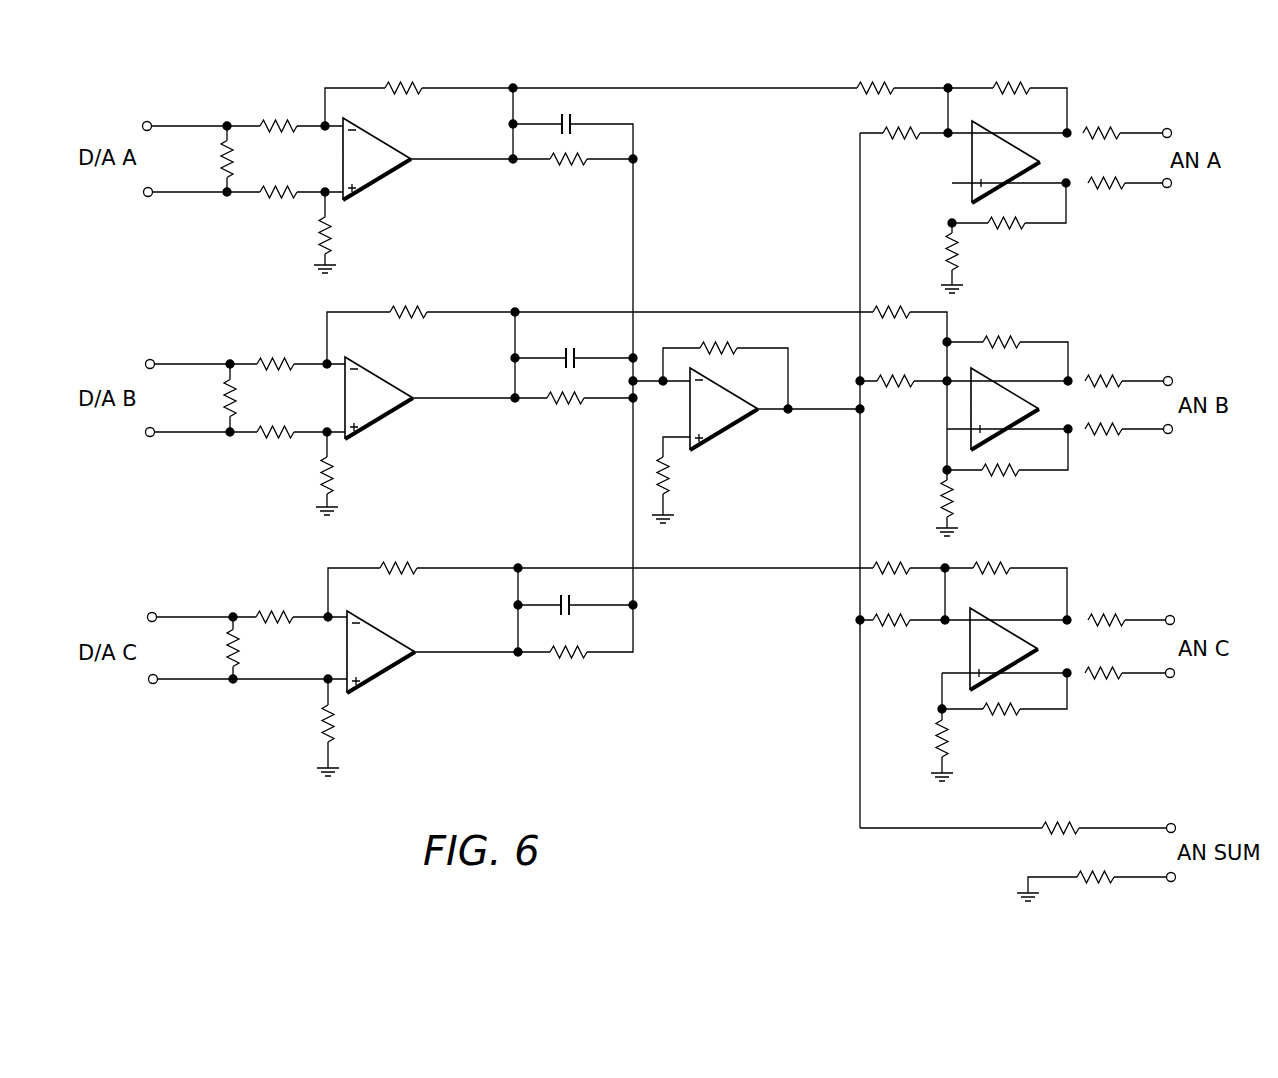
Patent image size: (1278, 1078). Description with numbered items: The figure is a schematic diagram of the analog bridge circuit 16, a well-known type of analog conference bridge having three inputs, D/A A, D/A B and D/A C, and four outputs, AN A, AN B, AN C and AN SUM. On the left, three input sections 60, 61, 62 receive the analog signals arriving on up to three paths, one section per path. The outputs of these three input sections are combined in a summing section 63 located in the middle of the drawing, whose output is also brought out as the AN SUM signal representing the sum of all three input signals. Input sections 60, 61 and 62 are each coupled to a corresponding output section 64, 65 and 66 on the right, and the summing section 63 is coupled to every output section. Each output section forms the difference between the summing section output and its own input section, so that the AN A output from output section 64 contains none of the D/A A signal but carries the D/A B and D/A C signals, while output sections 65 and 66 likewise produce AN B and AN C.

The analog bridge circuit 16 is at (1157, 82).
The input section 60 is at (348, 71).
The input section 61 is at (309, 322).
The input section 62 is at (316, 572).
The summing section 63 is at (763, 302).
The output section 64 is at (1083, 91).
The output section 65 is at (1085, 338).
The output section 66 is at (1086, 580).